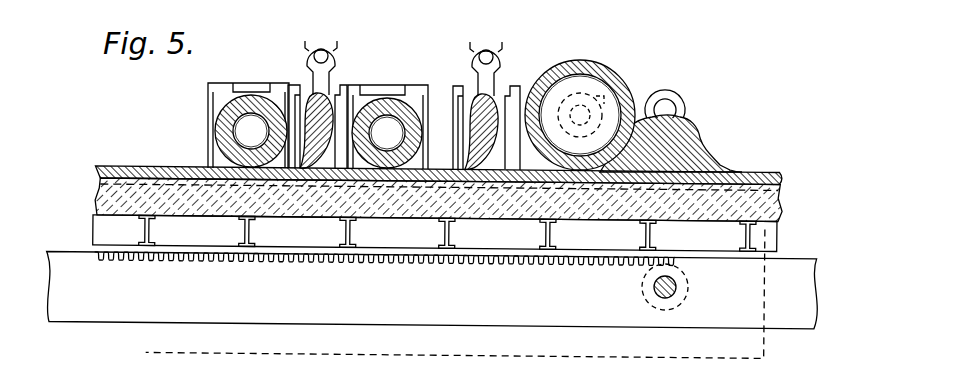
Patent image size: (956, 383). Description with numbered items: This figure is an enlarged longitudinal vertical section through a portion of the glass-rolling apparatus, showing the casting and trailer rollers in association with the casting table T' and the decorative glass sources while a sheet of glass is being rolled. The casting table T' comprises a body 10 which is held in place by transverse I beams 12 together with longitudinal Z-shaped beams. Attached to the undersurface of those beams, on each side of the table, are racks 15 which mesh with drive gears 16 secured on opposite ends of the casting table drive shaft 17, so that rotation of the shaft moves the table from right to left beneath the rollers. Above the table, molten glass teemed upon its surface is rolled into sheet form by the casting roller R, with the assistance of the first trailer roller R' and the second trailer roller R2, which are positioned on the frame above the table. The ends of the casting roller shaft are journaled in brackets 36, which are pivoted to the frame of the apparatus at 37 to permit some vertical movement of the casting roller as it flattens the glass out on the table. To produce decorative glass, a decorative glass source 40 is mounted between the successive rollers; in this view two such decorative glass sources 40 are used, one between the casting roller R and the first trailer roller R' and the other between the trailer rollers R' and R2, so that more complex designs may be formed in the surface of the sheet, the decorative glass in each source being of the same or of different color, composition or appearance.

The trailer roller R2 is at (215, 127).
The trailer roller R' is at (388, 111).
The casting roller R is at (586, 101).
The brackets 36 is at (602, 101).
The pivot 37 is at (679, 110).
The decorative glass source 40 is at (330, 97).
The body 10 is at (435, 232).
The I beams 12 is at (555, 232).
The racks 15 is at (561, 263).
The drive gears 16 is at (678, 284).
The casting table drive shaft 17 is at (655, 291).
The casting table T' is at (438, 238).